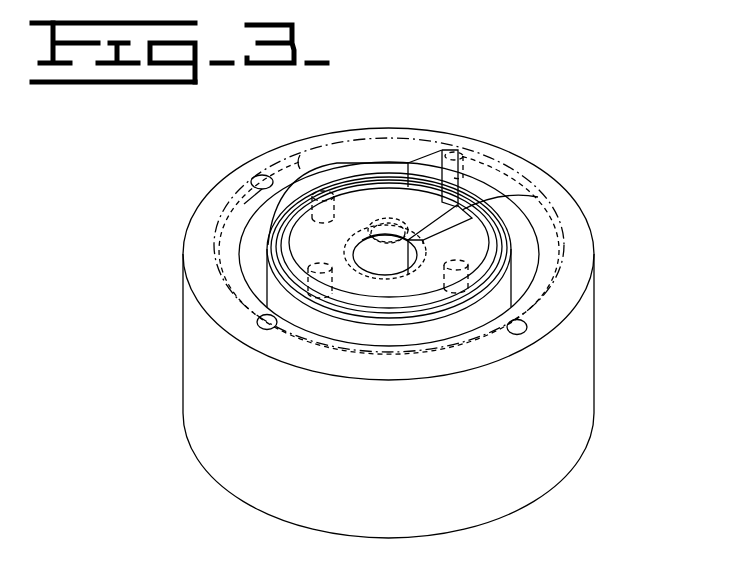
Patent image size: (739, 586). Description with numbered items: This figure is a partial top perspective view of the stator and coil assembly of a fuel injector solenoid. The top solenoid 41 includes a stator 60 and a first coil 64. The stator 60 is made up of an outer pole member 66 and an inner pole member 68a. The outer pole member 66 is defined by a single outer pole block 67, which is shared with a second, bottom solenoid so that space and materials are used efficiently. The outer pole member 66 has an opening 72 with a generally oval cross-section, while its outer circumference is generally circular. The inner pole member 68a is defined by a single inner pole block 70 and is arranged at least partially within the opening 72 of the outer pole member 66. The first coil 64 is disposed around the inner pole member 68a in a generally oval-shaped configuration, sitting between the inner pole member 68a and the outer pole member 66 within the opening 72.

The solenoid 41 is at (547, 153).
The stator 60 is at (473, 243).
The first coil 64 is at (538, 238).
The outer pole member 66 is at (578, 256).
The outer pole block 67 is at (183, 392).
The inner pole member 68a is at (306, 248).
The inner pole block 70 is at (365, 205).
The opening 72 is at (348, 168).